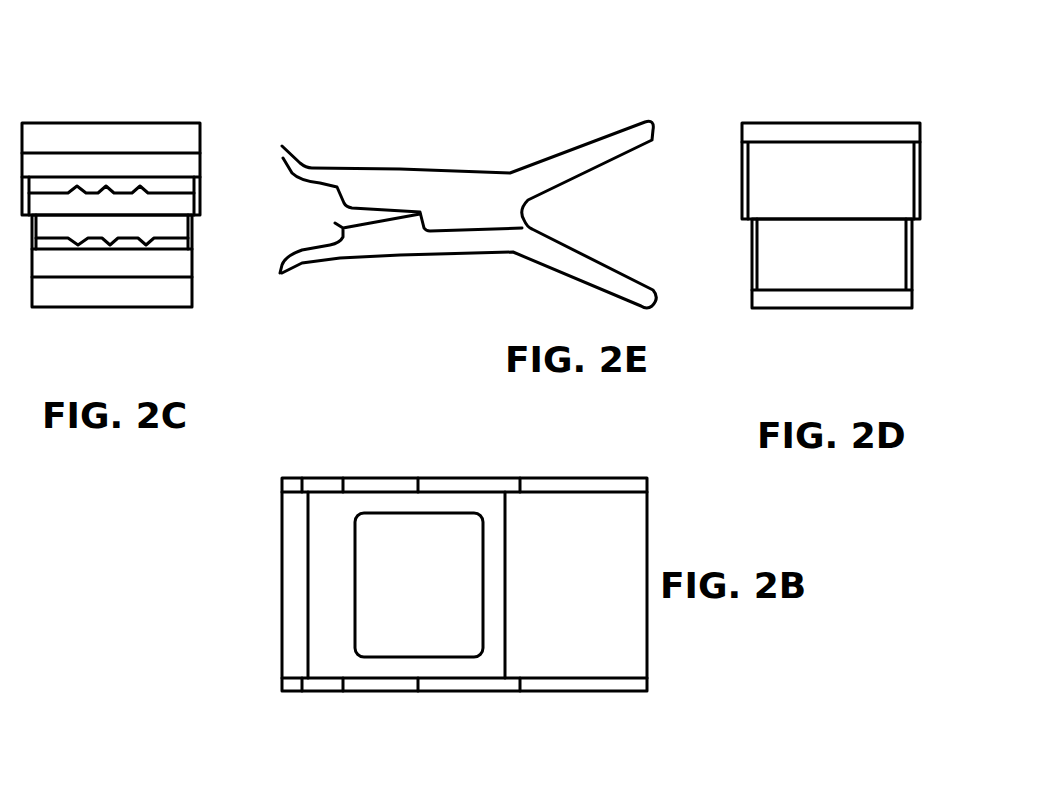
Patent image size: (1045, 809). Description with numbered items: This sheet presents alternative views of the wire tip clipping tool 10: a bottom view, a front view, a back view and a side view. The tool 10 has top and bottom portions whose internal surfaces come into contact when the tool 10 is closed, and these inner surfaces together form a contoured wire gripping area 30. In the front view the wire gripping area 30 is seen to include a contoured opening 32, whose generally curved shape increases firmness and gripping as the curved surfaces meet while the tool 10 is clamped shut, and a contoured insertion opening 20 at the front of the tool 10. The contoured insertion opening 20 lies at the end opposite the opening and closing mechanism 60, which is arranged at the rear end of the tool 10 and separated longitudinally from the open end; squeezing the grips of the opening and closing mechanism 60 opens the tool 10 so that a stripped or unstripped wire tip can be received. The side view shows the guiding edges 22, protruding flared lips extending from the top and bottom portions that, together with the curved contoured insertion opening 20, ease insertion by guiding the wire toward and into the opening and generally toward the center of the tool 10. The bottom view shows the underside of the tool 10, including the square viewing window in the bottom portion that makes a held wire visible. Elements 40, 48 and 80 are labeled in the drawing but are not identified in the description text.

In FIG. 2C, the wire tip clipping tool 10 is at (108, 80).
In FIG. 2E, the wire tip clipping tool 10 is at (462, 113).
In FIG. 2D, the wire tip clipping tool 10 is at (836, 90).
In FIG. 2B, the wire tip clipping tool 10 is at (450, 430).
In FIG. 2C, the contoured insertion opening 20 is at (204, 164).
In FIG. 2E, the contoured insertion opening 20 is at (283, 140).
In FIG. 2B, the contoured insertion opening 20 is at (276, 590).
In FIG. 2E, the guiding edges 22 is at (285, 182).
In FIG. 2C, the wire gripping area 30 is at (128, 255).
In FIG. 2E, the wire gripping area 30 is at (328, 217).
In FIG. 2C, the contoured opening 32 is at (66, 249).
In FIG. 2C, the jaw pad 40 is at (206, 208).
In FIG. 2E, the jaw pad 40 is at (442, 237).
In FIG. 2B, the jaw pad 40 is at (396, 470).
In FIG. 2D, the pad channel 48 is at (778, 219).
In FIG. 2E, the opening and closing mechanism 60 is at (635, 117).
In FIG. 2D, the opening and closing mechanism 60 is at (777, 117).
In FIG. 2B, the opening and closing mechanism 60 is at (626, 697).
In FIG. 2B, the window 80 is at (384, 668).